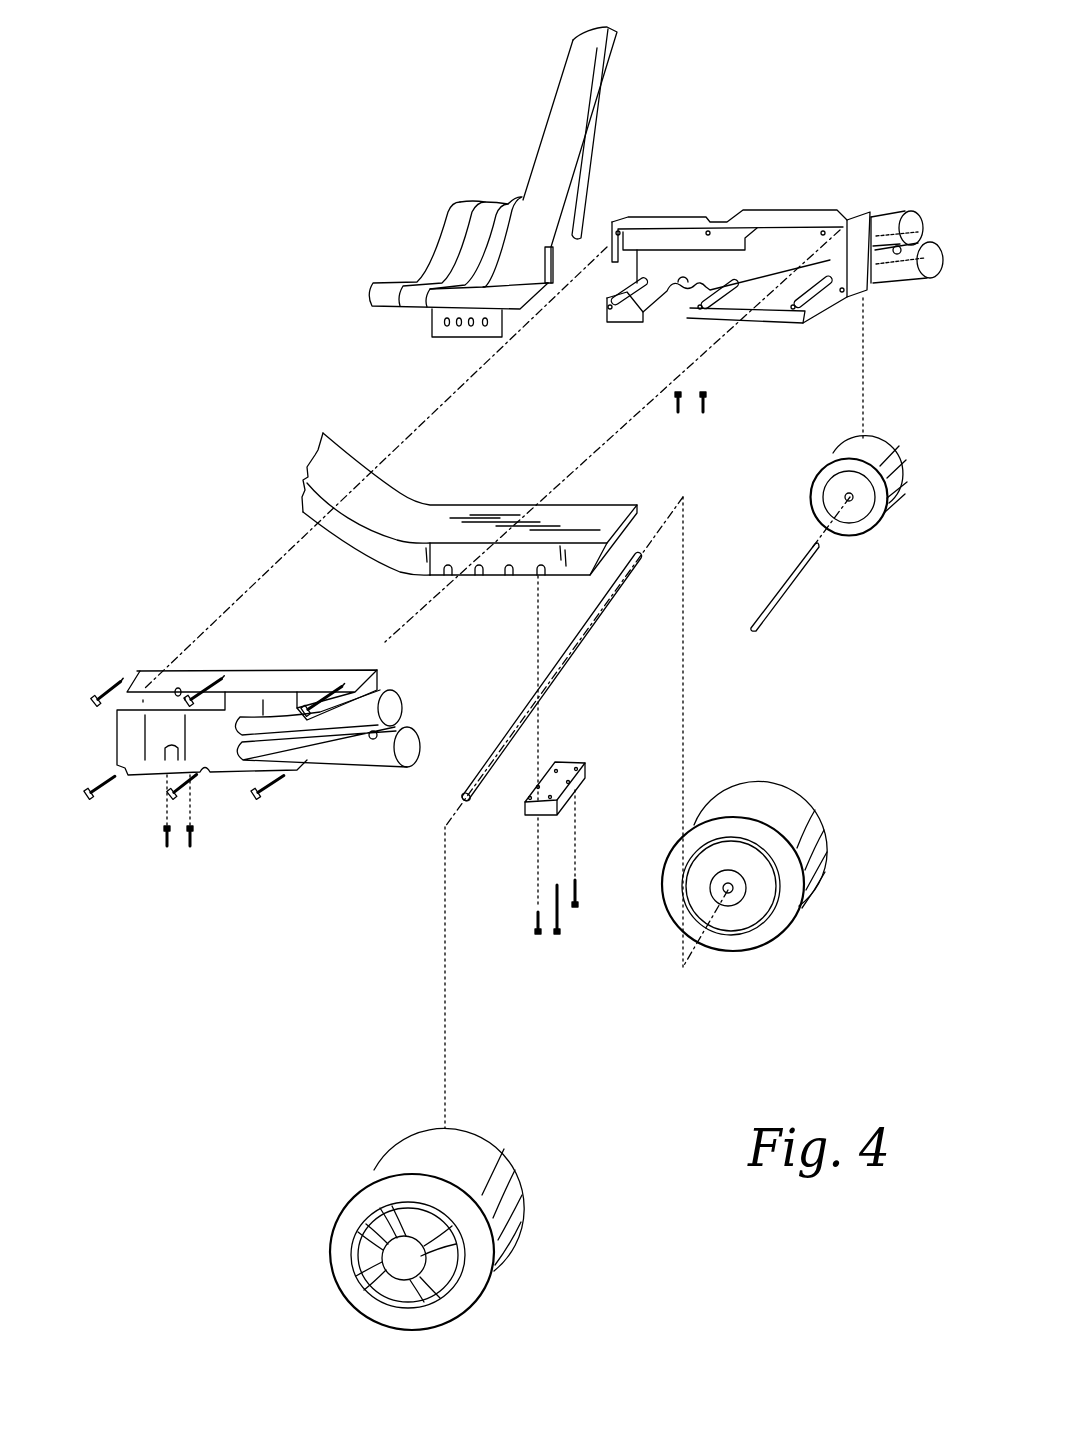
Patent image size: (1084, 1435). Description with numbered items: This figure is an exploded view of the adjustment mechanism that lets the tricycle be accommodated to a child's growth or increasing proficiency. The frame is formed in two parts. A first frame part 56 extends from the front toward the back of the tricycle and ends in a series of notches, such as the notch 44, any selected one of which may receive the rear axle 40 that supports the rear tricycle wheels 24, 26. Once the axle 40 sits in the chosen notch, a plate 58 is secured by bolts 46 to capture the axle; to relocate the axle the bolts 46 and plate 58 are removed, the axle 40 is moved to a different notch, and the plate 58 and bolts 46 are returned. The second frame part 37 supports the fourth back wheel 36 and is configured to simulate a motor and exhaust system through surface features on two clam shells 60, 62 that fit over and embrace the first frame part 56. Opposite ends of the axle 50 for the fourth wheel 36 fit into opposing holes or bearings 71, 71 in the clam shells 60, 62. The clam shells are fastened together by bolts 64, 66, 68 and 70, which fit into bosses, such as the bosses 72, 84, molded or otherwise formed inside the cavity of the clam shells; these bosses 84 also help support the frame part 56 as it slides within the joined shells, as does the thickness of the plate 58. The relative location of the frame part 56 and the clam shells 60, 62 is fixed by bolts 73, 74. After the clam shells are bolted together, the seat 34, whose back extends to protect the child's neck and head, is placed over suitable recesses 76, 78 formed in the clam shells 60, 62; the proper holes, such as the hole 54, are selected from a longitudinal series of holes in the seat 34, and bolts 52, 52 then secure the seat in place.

The rear tricycle wheel 24 is at (476, 1137).
The rear tricycle wheel 26 is at (790, 780).
The seat 34 is at (607, 114).
The fourth back wheel 36 is at (889, 450).
The second frame part 37 is at (808, 191).
The rear axle 40 is at (556, 677).
The notch 44 is at (442, 576).
The bolts 46 is at (551, 946).
The axle 50 is at (788, 586).
The bolts 52 is at (104, 690).
The hole 54 is at (467, 330).
The first frame part 56 is at (480, 505).
The plate 58 is at (581, 782).
The clam shell 60 is at (142, 800).
The clam shell 62 is at (636, 328).
The bolt 64 is at (304, 706).
The bolt 66 is at (88, 797).
The bolt 68 is at (196, 782).
The bolt 70 is at (275, 788).
The holes or bearings 71 is at (897, 246).
The boss 72 is at (628, 292).
The bolt 73 is at (190, 848).
The bolt 74 is at (703, 412).
The recess 76 is at (130, 696).
The recess 78 is at (668, 218).
The boss 84 is at (808, 296).